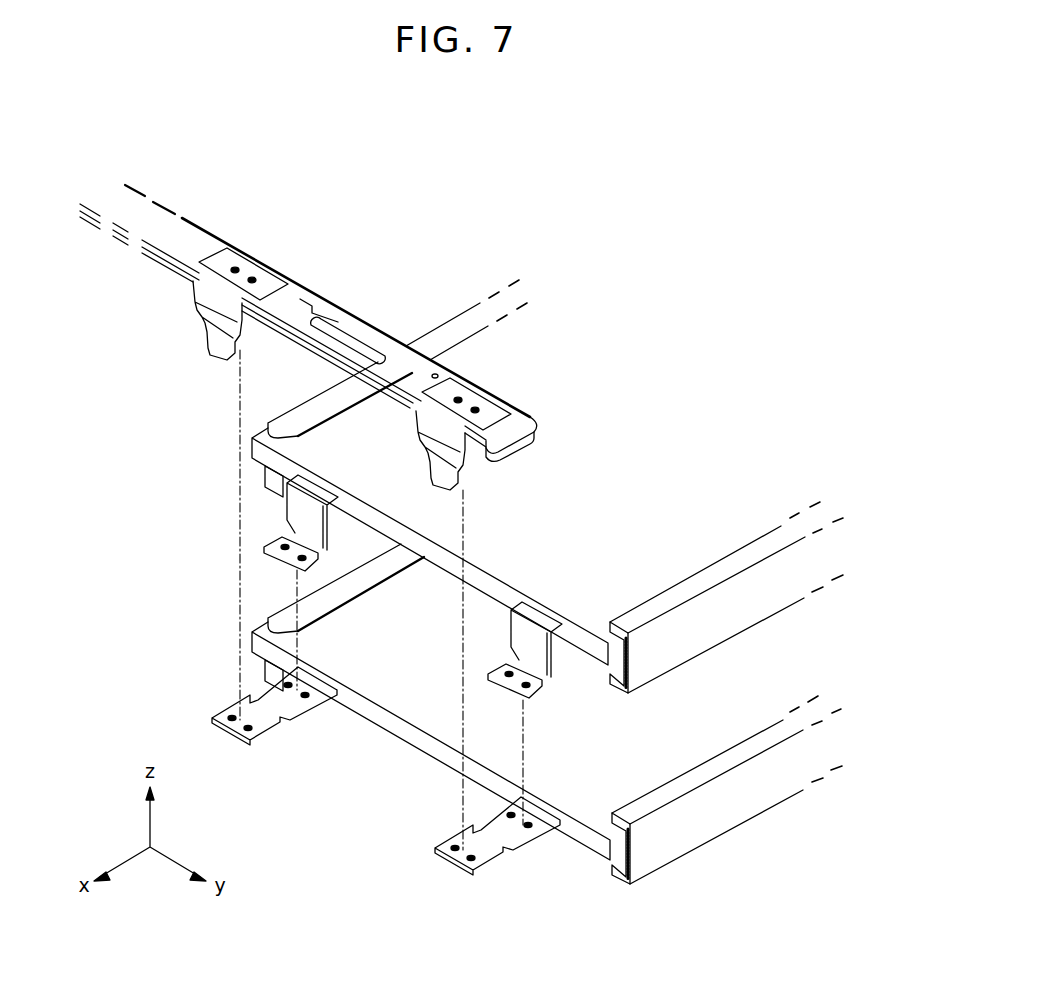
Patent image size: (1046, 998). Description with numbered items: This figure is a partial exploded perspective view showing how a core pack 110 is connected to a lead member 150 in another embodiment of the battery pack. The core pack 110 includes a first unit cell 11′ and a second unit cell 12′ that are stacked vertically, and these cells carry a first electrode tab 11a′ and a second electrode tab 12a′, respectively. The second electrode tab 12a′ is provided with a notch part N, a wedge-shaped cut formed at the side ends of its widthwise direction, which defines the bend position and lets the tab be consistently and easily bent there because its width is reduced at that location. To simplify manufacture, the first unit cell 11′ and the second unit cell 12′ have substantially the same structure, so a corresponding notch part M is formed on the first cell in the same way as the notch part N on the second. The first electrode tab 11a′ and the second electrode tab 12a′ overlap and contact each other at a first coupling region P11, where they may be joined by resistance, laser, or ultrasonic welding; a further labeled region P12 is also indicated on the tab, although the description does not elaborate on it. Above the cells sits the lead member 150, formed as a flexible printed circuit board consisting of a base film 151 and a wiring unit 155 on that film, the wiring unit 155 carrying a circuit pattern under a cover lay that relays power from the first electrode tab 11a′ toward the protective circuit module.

The core pack 110 is at (690, 302).
The lead member 150 is at (607, 343).
The base film 151 is at (537, 430).
The wiring unit 155 is at (537, 405).
The second unit cell 12′ is at (722, 628).
The first unit cell 11′ is at (720, 822).
The second electrode tab 12a′ is at (532, 703).
The first electrode tab 11a′ is at (462, 868).
The notch part N is at (318, 560).
The notch part M is at (280, 722).
The first coupling region P11 is at (530, 825).
The second fastening point P12 is at (452, 841).